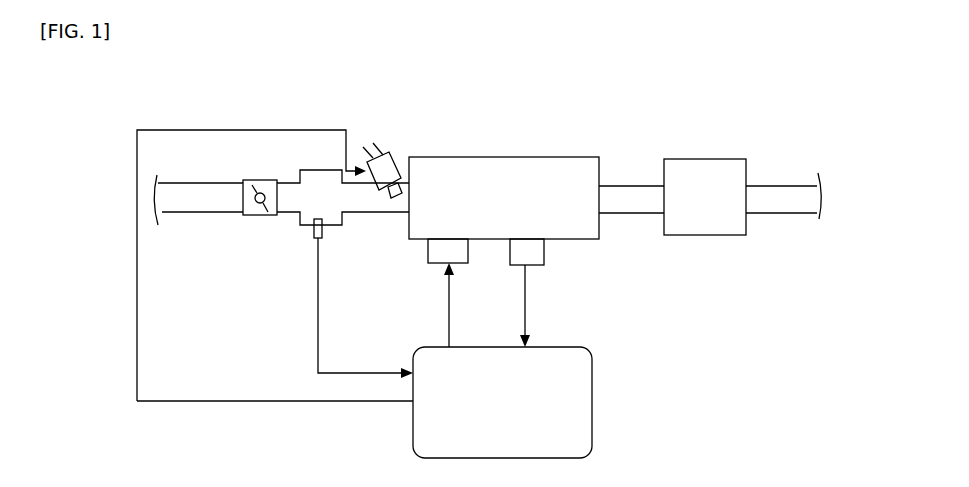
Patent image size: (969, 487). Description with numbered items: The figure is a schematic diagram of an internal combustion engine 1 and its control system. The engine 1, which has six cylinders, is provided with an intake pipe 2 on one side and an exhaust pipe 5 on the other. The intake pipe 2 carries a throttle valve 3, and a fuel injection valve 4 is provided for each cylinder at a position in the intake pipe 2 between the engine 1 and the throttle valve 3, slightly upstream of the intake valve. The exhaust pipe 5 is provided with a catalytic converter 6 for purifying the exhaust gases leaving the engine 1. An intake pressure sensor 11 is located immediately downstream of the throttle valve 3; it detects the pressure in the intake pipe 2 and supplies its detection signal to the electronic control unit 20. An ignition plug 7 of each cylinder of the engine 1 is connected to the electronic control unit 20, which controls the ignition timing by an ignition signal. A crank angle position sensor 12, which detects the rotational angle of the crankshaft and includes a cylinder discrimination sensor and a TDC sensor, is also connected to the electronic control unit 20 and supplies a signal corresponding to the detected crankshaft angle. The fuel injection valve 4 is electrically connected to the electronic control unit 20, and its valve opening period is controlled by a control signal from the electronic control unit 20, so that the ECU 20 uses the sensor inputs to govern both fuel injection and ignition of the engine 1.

The internal combustion engine 1 is at (485, 157).
The intake pipe 2 is at (173, 183).
The throttle valve 3 is at (257, 182).
The fuel injection valve 4 is at (390, 151).
The exhaust pipe 5 is at (639, 186).
The catalytic converter 6 is at (723, 159).
The ignition plug 7 is at (457, 265).
The intake pressure sensor 11 is at (315, 243).
The crank angle position sensor 12 is at (538, 267).
The electronic control unit 20 is at (413, 428).